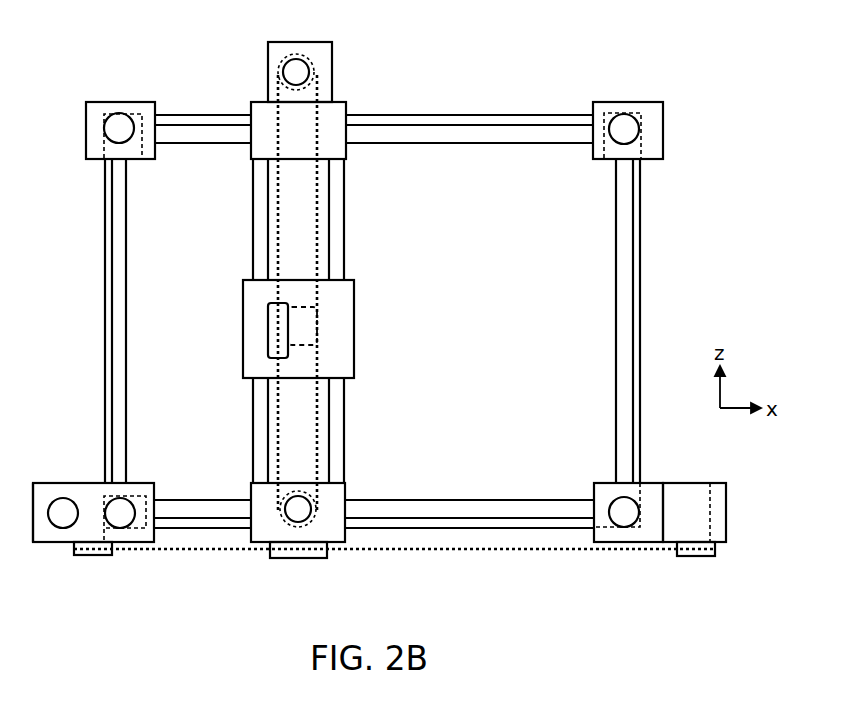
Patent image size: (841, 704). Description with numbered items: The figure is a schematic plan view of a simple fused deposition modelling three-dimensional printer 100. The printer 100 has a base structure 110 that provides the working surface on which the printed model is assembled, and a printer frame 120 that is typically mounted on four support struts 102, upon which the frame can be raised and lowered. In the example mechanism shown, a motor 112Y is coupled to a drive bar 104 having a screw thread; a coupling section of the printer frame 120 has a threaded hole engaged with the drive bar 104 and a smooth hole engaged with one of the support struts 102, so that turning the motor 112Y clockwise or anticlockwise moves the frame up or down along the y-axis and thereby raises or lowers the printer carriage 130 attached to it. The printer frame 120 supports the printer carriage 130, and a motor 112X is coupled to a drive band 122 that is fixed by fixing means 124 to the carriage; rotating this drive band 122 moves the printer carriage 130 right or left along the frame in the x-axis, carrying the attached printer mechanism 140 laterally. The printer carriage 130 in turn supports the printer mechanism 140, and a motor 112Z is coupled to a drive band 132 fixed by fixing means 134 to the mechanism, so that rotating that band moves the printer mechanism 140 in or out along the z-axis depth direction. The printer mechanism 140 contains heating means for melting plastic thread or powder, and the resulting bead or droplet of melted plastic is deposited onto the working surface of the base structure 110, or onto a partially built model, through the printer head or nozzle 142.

The FDM 3D printer 100 is at (557, 43).
The support struts 102 is at (120, 144).
The drive bar 104 is at (62, 498).
The base structure 110 is at (374, 329).
The motor 112X is at (701, 493).
The motor 112Y is at (48, 535).
The motor 112Z is at (300, 53).
The printer frame 120 is at (478, 143).
The drive band 122 is at (472, 550).
The fixing means 124 is at (305, 560).
The printer carriage 130 is at (345, 222).
The drive band 132 is at (278, 233).
The fixing means 134 is at (268, 345).
The printer mechanism 140 is at (354, 303).
The printer head or nozzle 142 is at (318, 330).